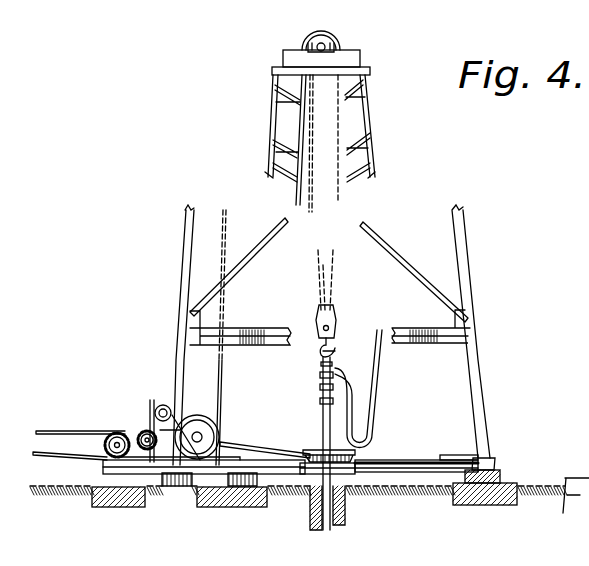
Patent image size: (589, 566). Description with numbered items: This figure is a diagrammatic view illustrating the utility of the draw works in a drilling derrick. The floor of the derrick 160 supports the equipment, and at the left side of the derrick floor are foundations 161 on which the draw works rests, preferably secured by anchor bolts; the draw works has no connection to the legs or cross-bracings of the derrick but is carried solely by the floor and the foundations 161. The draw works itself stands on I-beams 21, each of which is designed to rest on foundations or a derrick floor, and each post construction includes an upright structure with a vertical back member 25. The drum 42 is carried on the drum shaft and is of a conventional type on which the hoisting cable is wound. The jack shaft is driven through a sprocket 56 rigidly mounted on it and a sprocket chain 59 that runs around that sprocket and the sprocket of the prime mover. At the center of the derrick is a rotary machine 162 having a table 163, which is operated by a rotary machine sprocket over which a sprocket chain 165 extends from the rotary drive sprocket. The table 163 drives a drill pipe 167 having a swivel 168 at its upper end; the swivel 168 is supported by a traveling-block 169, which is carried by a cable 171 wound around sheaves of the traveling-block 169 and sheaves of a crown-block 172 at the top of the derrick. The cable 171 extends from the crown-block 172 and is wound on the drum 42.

The crown-block 172 is at (295, 53).
The cable 171 is at (296, 198).
The traveling-block 169 is at (333, 326).
The swivel 168 is at (321, 380).
The drill pipe 167 is at (324, 409).
The sprocket chain 165 is at (257, 446).
The table 163 is at (316, 453).
The rotary machine 162 is at (356, 460).
The floor of a derrick 160 is at (448, 460).
The foundations 161 is at (92, 500).
The I-beam 21 is at (152, 487).
The drum 42 is at (200, 413).
The vertical back member 25 is at (144, 433).
The sprocket 56 is at (115, 432).
The sprocket chain 59 is at (52, 430).